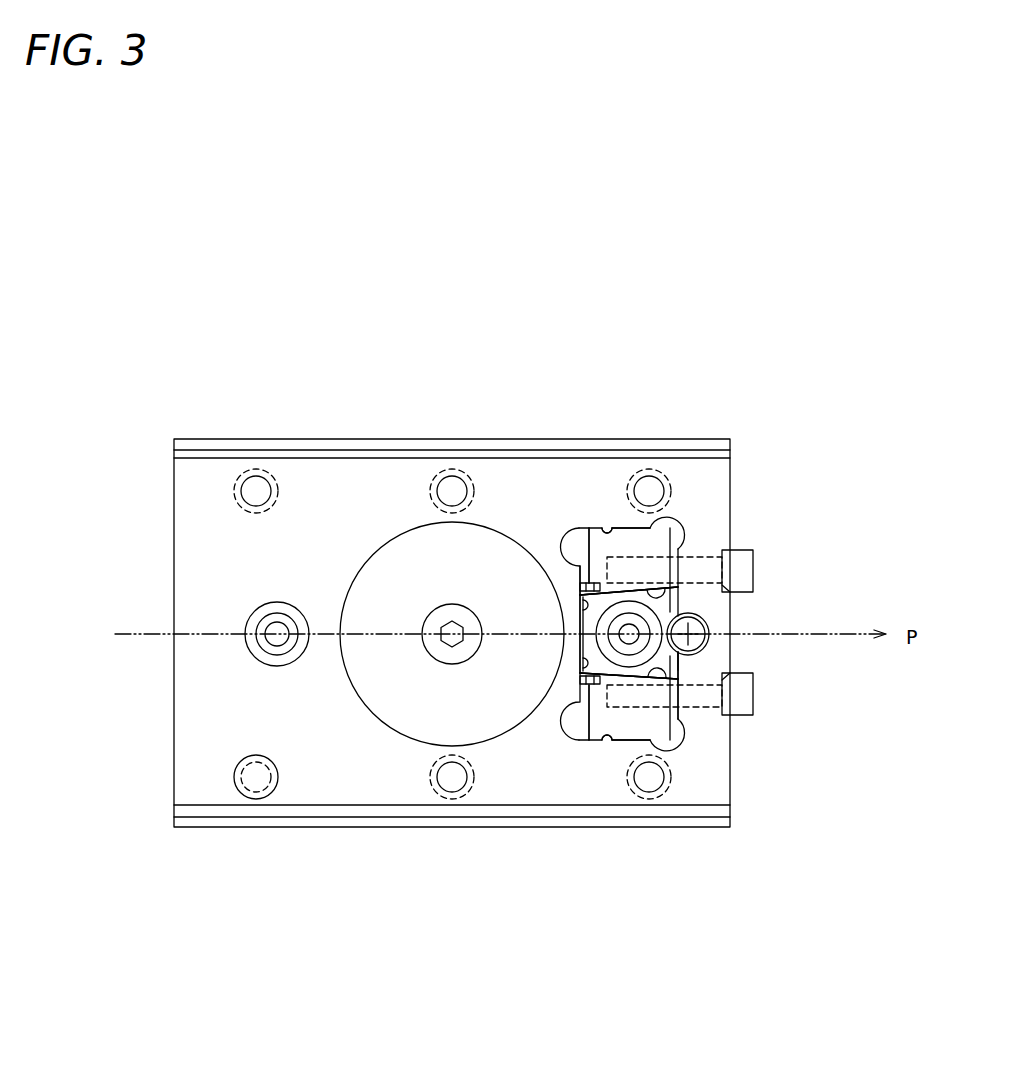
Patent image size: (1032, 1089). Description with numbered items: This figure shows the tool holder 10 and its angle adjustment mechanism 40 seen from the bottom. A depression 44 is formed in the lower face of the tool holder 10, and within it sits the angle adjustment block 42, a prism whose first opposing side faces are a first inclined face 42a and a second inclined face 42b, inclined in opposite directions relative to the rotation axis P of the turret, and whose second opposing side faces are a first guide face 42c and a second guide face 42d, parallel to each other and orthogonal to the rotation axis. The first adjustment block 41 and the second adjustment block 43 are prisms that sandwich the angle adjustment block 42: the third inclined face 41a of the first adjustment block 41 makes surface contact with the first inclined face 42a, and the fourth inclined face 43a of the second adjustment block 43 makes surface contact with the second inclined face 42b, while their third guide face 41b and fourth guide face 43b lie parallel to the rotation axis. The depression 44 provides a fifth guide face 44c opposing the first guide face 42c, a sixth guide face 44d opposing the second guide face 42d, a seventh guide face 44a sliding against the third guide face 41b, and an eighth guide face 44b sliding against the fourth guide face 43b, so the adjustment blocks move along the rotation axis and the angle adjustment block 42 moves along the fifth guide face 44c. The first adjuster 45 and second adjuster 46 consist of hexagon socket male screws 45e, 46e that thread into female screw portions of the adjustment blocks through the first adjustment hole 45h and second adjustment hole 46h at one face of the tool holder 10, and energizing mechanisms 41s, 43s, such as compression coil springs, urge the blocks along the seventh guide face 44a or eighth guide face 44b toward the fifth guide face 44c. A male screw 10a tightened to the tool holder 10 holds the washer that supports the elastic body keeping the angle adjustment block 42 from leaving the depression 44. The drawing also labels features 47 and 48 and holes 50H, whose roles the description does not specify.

The tool holder 10 is at (372, 438).
The male screw 10a is at (710, 642).
The clamp mechanism 40 is at (677, 472).
The first adjustment block 41 is at (648, 545).
The third inclined face 41a is at (650, 593).
The third guide face 41b is at (606, 533).
The energizing mechanism 41s is at (590, 584).
The angle adjustment block 42 is at (668, 600).
The first inclined face 42a is at (662, 598).
The second inclined face 42b is at (670, 681).
The first guide face 42c is at (682, 678).
The second guide face 42d is at (578, 675).
The second adjustment block 43 is at (637, 730).
The fourth inclined face 43a is at (630, 679).
The fourth guide face 43b is at (596, 736).
The energizing mechanism 43s is at (590, 685).
The depression 44 is at (580, 568).
The seventh guide face 44a is at (622, 527).
The eighth guide face 44b is at (634, 729).
The fifth guide face 44c is at (680, 660).
The sixth guide face 44d is at (578, 596).
The first adjuster 45 is at (748, 562).
The hexagon socket male screw 45e is at (722, 557).
The first adjustment hole 45h is at (726, 590).
The second adjuster 46 is at (753, 710).
The hexagon socket male screw 46e is at (722, 708).
The second adjustment hole 46h is at (720, 675).
The boss 47 is at (262, 632).
The pivot bolt 48 is at (631, 632).
The mounting holes 50H is at (257, 480).